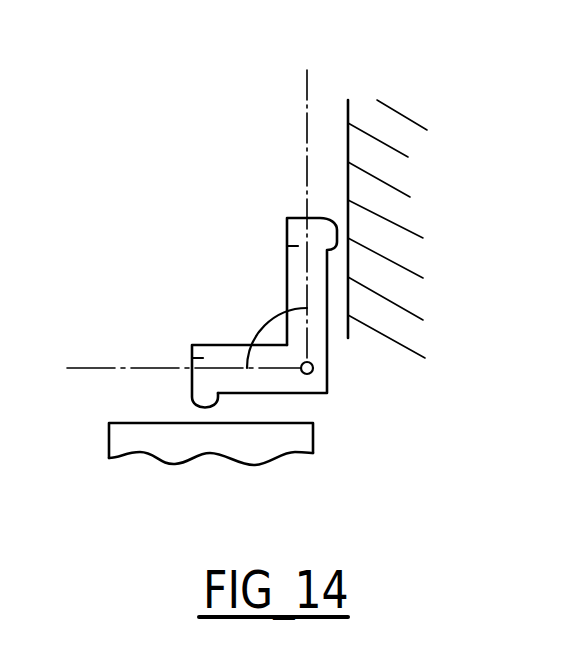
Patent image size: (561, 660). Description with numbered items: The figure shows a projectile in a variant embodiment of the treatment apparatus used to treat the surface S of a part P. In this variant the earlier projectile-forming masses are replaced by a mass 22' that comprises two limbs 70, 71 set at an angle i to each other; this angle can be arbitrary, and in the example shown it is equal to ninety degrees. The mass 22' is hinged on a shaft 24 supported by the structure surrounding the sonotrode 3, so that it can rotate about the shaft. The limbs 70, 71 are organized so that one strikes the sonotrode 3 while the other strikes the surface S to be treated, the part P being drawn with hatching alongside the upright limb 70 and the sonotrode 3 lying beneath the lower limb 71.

The mass 22' is at (224, 273).
The limb 70 is at (298, 246).
The limb 71 is at (192, 352).
The shaft 24 is at (313, 368).
The sonotrode 3 is at (293, 443).
The surface S is at (348, 128).
The part P is at (389, 229).
The angle i is at (276, 324).